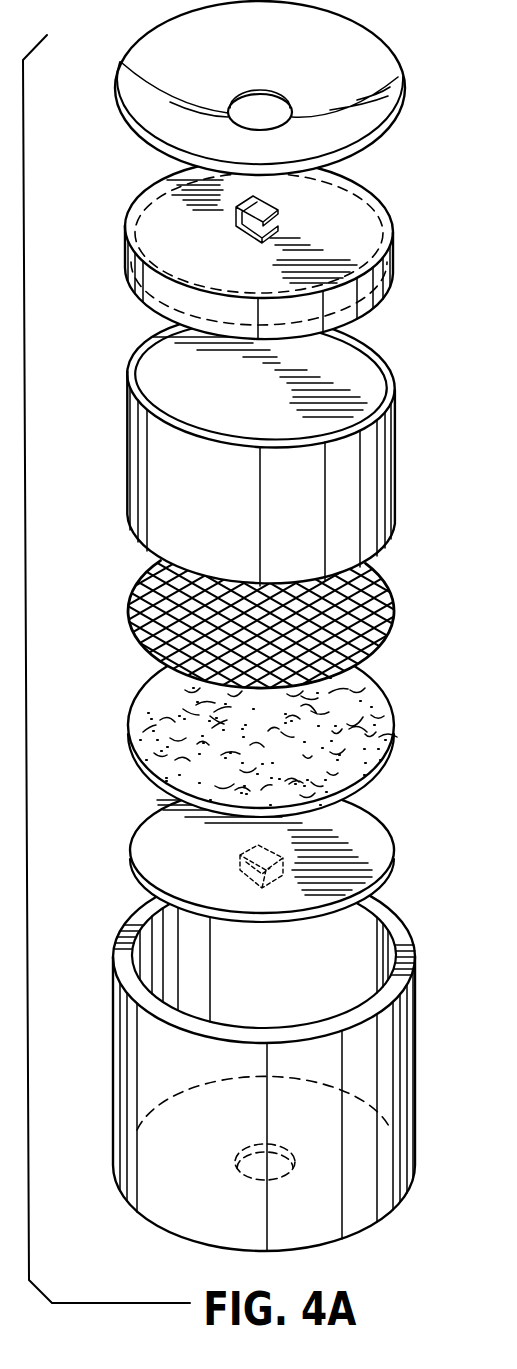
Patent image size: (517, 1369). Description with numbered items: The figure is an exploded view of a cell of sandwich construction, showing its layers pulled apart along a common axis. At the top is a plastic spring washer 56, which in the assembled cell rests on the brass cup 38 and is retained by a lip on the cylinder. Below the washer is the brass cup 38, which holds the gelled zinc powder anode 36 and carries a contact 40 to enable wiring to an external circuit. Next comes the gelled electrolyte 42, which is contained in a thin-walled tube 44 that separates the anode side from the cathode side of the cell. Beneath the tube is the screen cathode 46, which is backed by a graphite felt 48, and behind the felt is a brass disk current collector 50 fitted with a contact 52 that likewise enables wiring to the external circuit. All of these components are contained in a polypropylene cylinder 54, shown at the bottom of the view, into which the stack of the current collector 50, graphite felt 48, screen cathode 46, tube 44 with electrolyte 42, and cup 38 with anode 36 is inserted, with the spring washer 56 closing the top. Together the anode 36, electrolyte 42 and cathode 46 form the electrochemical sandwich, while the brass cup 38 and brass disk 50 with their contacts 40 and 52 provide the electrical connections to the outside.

The gelled zinc powder anode 36 is at (382, 302).
The brass cup 38 is at (360, 230).
The contact 40 is at (282, 205).
The gelled electrolyte 42 is at (357, 362).
The thin-walled tube 44 is at (395, 436).
The screen cathode 46 is at (395, 609).
The graphite felt 48 is at (395, 731).
The brass disk current collector 50 is at (373, 838).
The contact 52 is at (237, 862).
The polypropylene cylinder 54 is at (402, 1062).
The plastic spring washer 56 is at (370, 66).